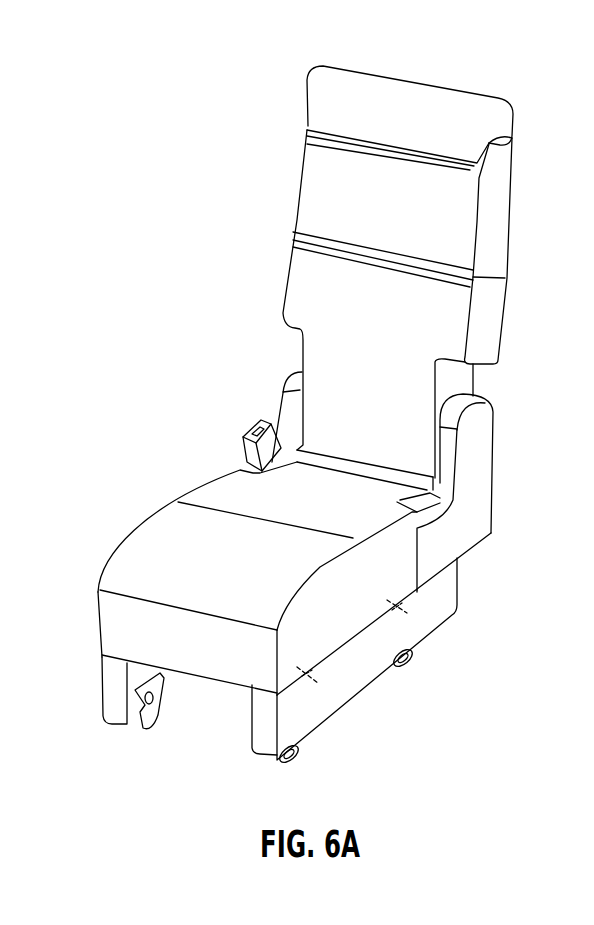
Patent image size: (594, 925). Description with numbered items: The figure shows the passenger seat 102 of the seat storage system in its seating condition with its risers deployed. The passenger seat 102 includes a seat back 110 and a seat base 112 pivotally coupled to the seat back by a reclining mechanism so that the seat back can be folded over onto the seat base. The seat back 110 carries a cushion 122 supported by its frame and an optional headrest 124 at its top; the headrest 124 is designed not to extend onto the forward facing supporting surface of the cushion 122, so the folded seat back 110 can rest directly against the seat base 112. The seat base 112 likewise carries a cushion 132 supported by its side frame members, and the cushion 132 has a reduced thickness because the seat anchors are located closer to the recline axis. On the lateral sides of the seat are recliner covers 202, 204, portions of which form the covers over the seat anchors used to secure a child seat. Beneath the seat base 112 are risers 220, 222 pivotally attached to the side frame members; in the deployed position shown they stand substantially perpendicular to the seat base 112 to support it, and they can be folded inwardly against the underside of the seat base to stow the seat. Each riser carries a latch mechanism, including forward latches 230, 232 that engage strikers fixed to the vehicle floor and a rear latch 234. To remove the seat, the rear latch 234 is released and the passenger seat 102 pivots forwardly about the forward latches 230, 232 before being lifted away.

The passenger seat 102 is at (200, 290).
The seat back 110 is at (315, 180).
The seat base 112 is at (157, 525).
The cushion 122 is at (495, 182).
The headrest 124 is at (413, 88).
The cushion 132 is at (130, 563).
The recliner cover 202 is at (473, 468).
The recliner cover 204 is at (283, 405).
The riser 220 is at (343, 677).
The riser 222 is at (100, 698).
The forward latch 230 is at (290, 758).
The forward latch 232 is at (158, 705).
The rear latch 234 is at (410, 664).